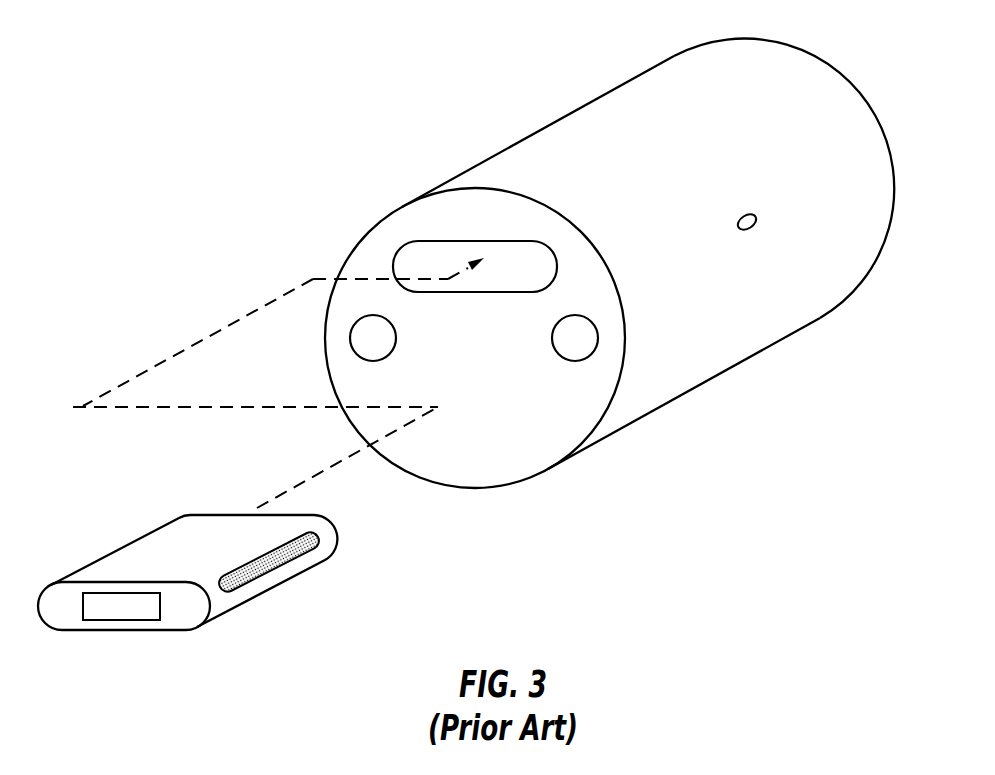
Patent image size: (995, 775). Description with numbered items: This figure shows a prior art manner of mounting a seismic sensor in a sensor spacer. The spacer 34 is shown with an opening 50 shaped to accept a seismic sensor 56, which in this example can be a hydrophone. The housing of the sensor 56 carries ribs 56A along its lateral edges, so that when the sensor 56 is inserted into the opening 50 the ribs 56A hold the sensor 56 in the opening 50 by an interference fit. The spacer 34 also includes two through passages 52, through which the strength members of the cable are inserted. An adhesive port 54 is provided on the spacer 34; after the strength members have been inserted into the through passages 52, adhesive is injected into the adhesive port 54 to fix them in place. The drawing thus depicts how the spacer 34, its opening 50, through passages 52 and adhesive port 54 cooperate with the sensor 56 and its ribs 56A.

The spacer 34 is at (722, 373).
The opening 50 is at (534, 272).
The through passages 52 is at (373, 338).
The adhesive port 54 is at (737, 228).
The seismic sensor 56 is at (131, 543).
The ribs 56A is at (289, 566).